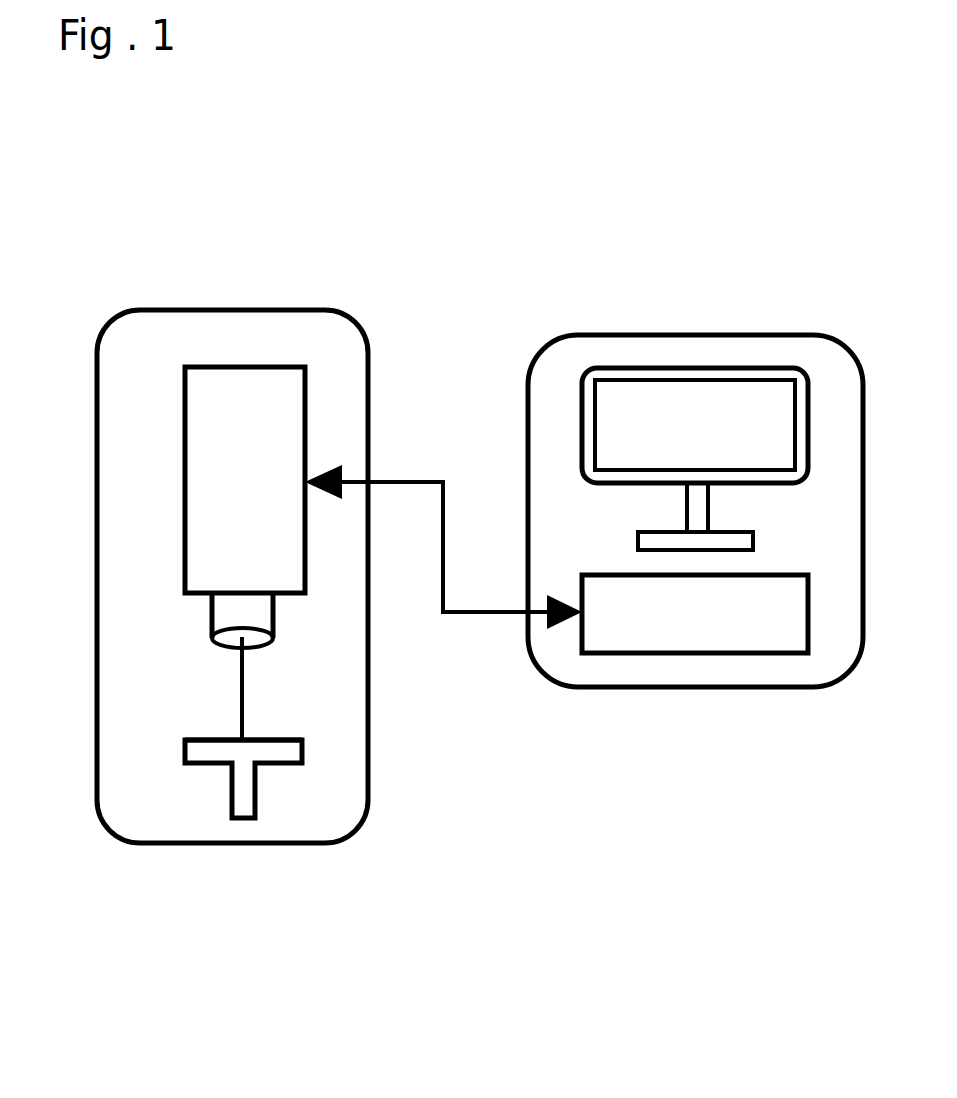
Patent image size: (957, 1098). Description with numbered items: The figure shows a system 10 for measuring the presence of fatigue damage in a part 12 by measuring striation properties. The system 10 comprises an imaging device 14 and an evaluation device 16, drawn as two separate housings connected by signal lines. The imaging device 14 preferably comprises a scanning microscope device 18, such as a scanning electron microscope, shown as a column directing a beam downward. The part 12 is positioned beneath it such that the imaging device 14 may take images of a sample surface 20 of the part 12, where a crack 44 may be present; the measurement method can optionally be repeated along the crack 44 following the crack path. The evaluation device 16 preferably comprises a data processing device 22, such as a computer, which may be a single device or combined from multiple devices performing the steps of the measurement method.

The system 10 is at (462, 185).
The part 12 is at (248, 802).
The imaging device 14 is at (240, 385).
The evaluation device 16 is at (683, 300).
The scanning microscope device 18 is at (300, 565).
The sample surface 20 is at (246, 740).
The data processing device 22 is at (750, 607).
The crack 44 is at (238, 740).